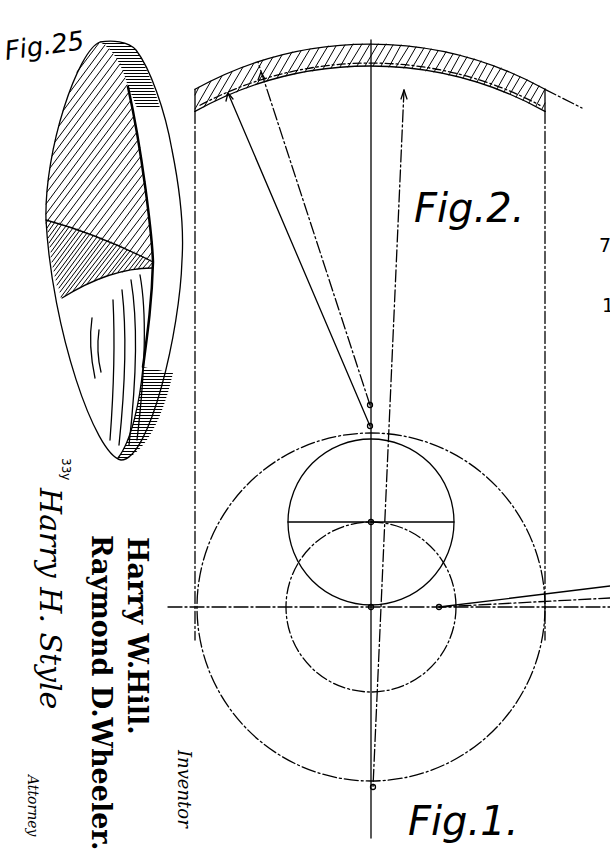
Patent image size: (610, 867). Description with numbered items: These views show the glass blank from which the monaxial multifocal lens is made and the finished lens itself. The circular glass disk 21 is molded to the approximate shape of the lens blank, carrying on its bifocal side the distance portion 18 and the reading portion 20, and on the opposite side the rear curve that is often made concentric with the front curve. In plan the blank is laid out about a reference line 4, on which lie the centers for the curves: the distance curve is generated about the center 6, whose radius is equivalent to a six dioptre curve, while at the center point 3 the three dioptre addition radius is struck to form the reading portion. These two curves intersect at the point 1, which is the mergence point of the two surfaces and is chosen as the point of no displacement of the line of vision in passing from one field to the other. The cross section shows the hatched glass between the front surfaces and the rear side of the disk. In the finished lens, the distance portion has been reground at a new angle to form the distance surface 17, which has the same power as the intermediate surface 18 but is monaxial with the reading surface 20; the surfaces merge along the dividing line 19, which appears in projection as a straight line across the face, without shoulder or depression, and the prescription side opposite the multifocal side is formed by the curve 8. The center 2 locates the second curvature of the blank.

In FIG. 25, the mergence point 1 is at (152, 270).
In FIG. 1, the mergence point 1 is at (374, 521).
In FIG. 1, the center of curvature of rear surface 2 is at (374, 609).
In FIG. 2, the center point of reading curve 3 is at (405, 100).
In FIG. 1, the center point of reading curve 3 is at (439, 606).
In FIG. 1, the line 4— 4 is at (384, 607).
In FIG. 2, the center of distance curve 6 is at (301, 261).
In FIG. 25, the prescription curve 8 is at (158, 101).
In FIG. 25, the distance surface 17 is at (93, 78).
In FIG. 1, the distance surface 17 is at (305, 487).
In FIG. 25, the intermediate surface 18 is at (62, 288).
In FIG. 2, the intermediate surface 18 is at (283, 80).
In FIG. 1, the intermediate surface 18 is at (297, 537).
In FIG. 25, the dividing line 19 is at (55, 248).
In FIG. 25, the reading surface 20 is at (97, 407).
In FIG. 2, the reading surface 20 is at (361, 76).
In FIG. 1, the reading surface 20 is at (327, 572).
In FIG. 2, the circular glass disk 21 is at (485, 62).